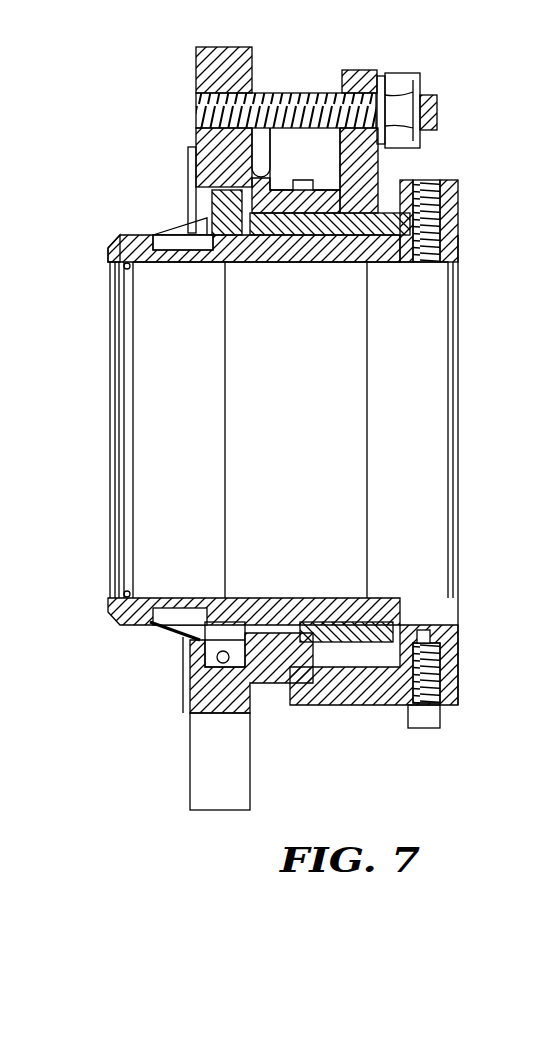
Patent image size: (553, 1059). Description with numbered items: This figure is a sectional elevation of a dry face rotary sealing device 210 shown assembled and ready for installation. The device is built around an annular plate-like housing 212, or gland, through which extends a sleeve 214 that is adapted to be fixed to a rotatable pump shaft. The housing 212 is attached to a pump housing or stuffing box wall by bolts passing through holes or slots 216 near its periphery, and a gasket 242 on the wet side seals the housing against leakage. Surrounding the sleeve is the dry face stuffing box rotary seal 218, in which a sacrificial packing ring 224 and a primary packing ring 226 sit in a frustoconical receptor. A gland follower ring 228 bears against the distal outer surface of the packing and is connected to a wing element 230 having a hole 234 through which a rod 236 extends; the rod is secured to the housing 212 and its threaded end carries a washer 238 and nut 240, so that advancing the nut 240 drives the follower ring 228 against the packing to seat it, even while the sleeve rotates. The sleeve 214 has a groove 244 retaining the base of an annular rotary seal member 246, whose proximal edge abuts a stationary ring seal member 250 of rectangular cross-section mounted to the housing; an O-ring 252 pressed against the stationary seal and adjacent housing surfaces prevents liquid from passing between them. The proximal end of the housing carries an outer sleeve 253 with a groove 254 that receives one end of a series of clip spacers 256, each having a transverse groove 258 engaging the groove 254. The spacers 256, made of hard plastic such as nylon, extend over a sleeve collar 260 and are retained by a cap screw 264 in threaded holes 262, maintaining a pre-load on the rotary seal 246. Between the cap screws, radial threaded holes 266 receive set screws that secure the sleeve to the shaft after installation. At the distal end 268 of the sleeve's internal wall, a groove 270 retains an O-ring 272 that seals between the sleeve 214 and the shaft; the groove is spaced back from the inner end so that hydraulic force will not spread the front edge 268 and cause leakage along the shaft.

The dry face rotary sealing device 210 is at (316, 75).
The annular plate-like housing 212 is at (196, 59).
The sleeve 214 is at (110, 240).
The holes or slots 216 is at (216, 756).
The dry face stuffing box rotary seal 218 is at (200, 644).
The sacrificial packing ring 224 is at (262, 262).
The primary packing ring 226 is at (300, 262).
The gland follower ring 228 is at (410, 430).
The wing element 230 is at (382, 170).
The hole 234 is at (358, 70).
The rod 236 is at (437, 112).
The washer 238 is at (408, 86).
The nut 240 is at (386, 80).
The gasket 242 is at (190, 168).
The groove 244 is at (176, 262).
The annular rotary seal member 246 is at (186, 230).
The stationary ring seal member 250 is at (214, 200).
The O-ring 252 is at (206, 664).
The outer sleeve 253 is at (268, 132).
The groove 254 is at (299, 184).
The clip spacer 256 is at (322, 705).
The transverse groove 258 is at (312, 624).
The sleeve collar 260 is at (440, 660).
The threaded holes 262 is at (430, 638).
The cap screw 264 is at (428, 728).
The threaded holes 266 is at (458, 230).
The distal end 268 is at (110, 254).
The groove 270 is at (132, 328).
The O-ring 272 is at (110, 598).